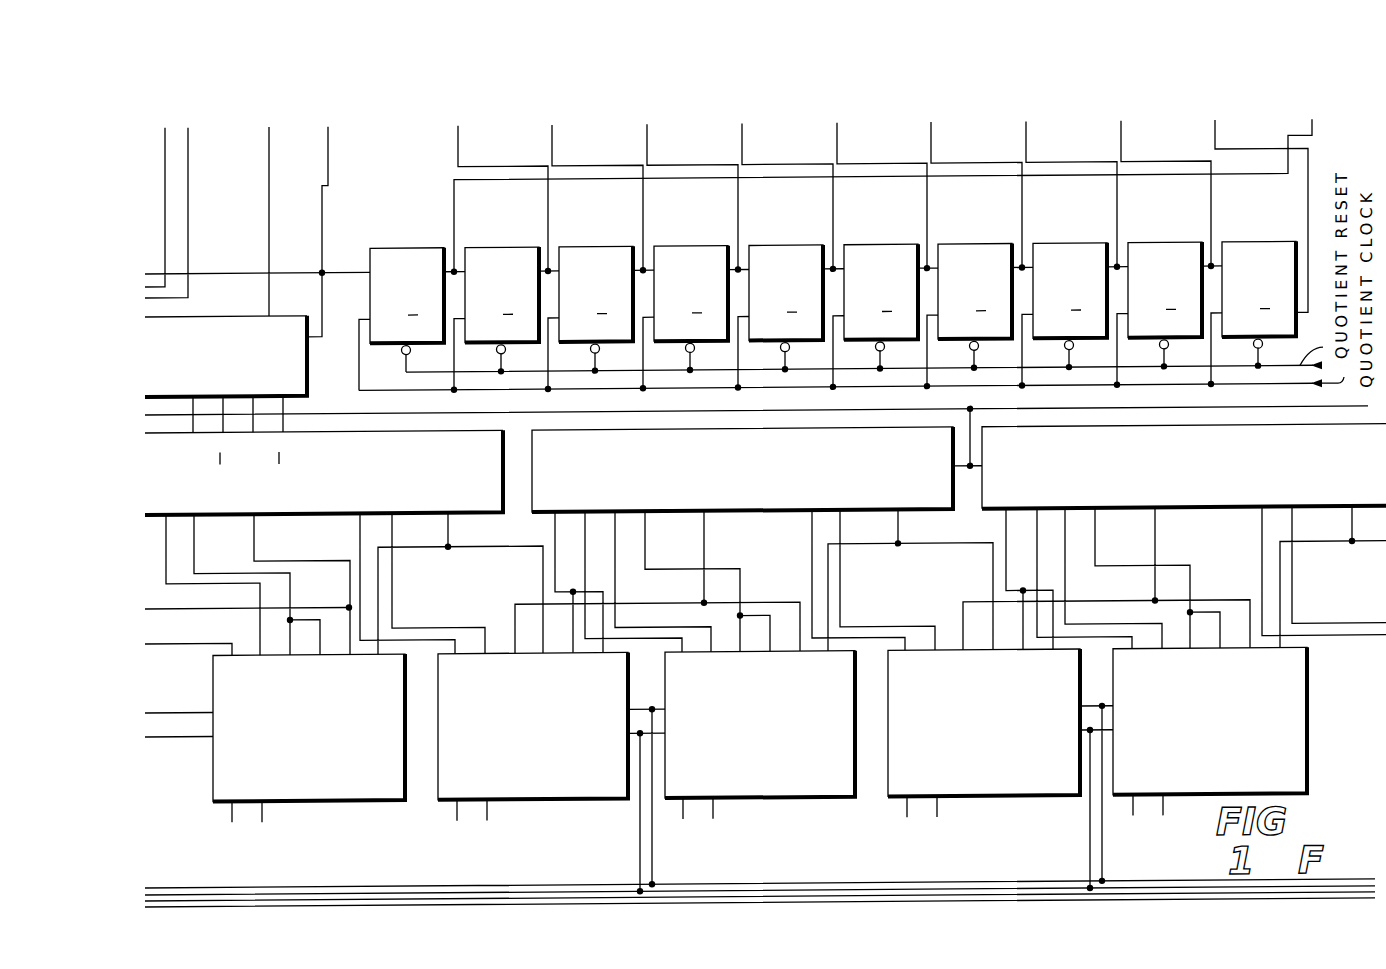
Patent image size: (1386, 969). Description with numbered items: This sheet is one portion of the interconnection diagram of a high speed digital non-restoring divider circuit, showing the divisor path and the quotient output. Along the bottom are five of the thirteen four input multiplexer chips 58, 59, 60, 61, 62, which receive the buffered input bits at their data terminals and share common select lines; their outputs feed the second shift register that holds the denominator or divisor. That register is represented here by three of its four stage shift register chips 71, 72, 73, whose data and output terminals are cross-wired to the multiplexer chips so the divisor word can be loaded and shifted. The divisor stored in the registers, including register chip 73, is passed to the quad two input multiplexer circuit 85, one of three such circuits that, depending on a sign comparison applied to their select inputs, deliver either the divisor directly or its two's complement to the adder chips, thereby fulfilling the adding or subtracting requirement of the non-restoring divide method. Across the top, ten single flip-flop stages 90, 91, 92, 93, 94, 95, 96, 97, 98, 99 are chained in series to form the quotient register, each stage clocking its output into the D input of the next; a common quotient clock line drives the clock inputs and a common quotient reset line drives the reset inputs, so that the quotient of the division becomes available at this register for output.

The quad two input multiplexer circuit 85 is at (307, 371).
The quotient register stage 99 is at (382, 250).
The quotient register stage 98 is at (477, 250).
The quotient register stage 97 is at (571, 250).
The quotient register stage 96 is at (666, 250).
The quotient register stage 95 is at (761, 250).
The quotient register stage 94 is at (856, 250).
The quotient register stage 93 is at (950, 250).
The quotient register stage 92 is at (1045, 250).
The quotient register stage 91 is at (1140, 250).
The quotient register stage 90 is at (1234, 250).
The four stage shift register chip 73 is at (464, 516).
The four stage shift register chip 72 is at (909, 517).
The four stage shift register chip 71 is at (1183, 518).
The four input multiplexer chip 62 is at (353, 803).
The four input multiplexer chip 61 is at (587, 803).
The four input multiplexer chip 60 is at (812, 805).
The four input multiplexer chip 59 is at (1033, 807).
The four input multiplexer chip 58 is at (1307, 748).